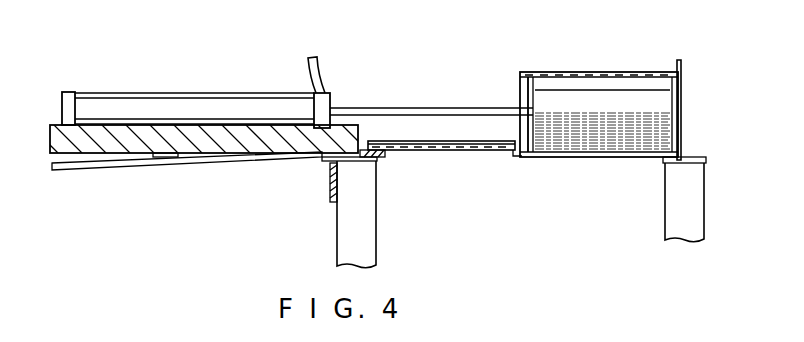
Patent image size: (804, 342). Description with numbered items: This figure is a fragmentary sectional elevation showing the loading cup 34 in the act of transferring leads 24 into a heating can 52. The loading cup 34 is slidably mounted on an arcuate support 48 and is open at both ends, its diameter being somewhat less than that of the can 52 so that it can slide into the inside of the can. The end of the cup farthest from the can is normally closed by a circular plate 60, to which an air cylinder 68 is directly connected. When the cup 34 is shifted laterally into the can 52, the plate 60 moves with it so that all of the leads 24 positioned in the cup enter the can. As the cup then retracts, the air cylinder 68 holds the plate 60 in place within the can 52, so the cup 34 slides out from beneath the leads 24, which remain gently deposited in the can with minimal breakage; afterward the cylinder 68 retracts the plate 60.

The air cylinder 68 is at (183, 108).
The arcuate support 48 is at (440, 152).
The leads 24 is at (590, 128).
The heating can 52 is at (590, 73).
The circular plate 60 is at (535, 80).
The loading cup 34 is at (600, 104).